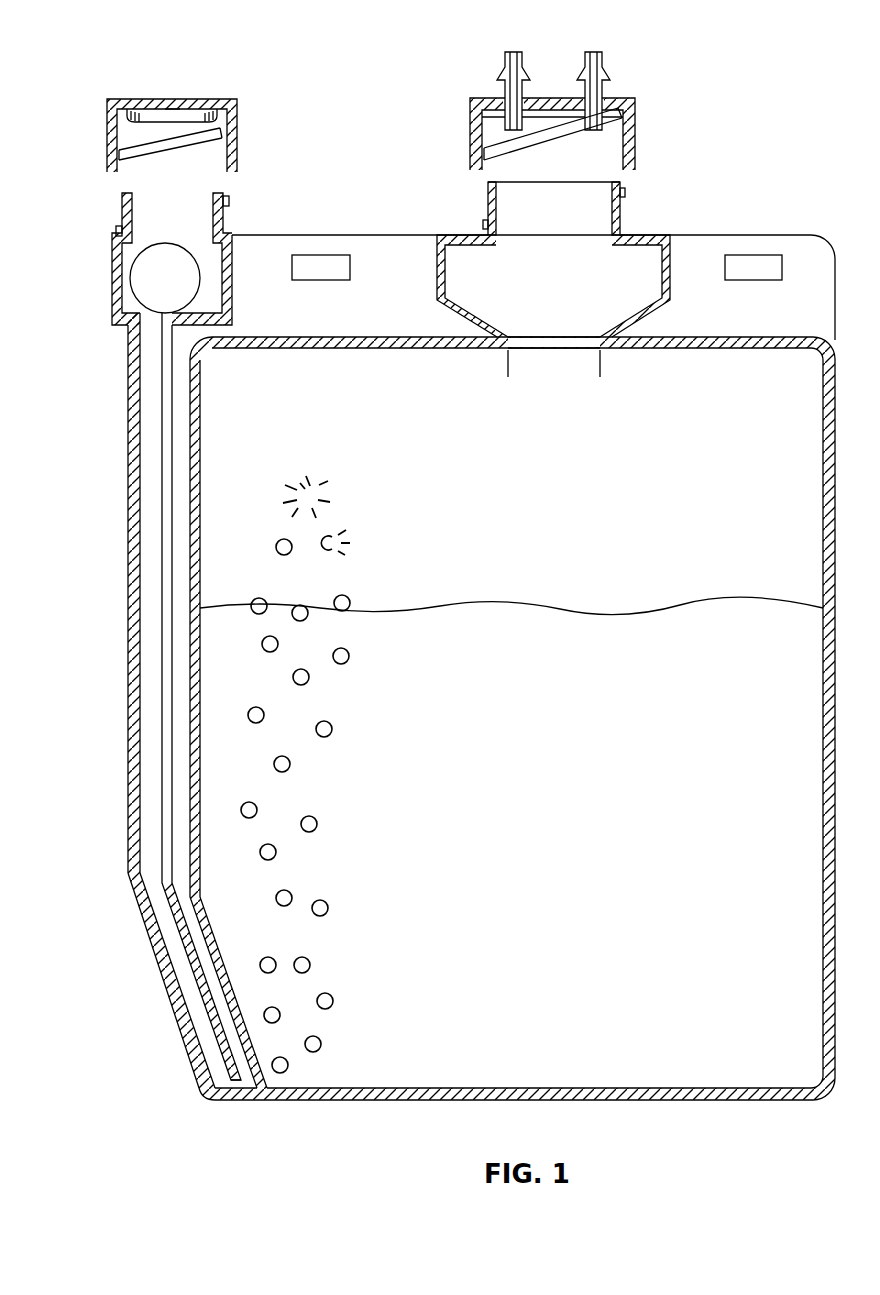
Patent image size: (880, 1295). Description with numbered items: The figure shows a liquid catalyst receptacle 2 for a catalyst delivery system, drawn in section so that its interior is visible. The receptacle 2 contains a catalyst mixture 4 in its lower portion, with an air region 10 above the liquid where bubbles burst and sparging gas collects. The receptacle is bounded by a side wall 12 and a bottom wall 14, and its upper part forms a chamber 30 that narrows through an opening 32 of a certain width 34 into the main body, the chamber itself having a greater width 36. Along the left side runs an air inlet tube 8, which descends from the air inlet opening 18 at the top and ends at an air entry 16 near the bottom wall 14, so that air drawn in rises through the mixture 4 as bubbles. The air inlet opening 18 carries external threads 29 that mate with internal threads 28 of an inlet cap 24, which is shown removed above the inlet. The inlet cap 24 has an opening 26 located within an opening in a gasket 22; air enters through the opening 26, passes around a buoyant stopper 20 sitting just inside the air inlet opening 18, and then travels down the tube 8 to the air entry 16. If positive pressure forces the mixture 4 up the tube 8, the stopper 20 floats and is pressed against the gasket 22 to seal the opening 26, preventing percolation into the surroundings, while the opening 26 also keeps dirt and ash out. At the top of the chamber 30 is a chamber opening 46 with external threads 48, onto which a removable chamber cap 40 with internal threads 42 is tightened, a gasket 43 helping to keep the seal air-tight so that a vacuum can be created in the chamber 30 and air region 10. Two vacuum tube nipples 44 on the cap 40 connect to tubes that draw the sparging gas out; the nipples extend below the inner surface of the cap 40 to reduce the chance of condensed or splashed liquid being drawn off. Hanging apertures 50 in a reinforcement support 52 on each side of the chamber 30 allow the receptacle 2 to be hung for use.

The liquid catalyst receptacle 2 is at (433, 577).
The catalyst mixture 4 is at (646, 787).
The air inlet tube 8 is at (130, 678).
The air region 10 is at (550, 479).
The container side wall 12 is at (200, 415).
The container bottom wall 14 is at (600, 1088).
The air entry 16 is at (270, 1087).
The air inlet opening 18 is at (150, 192).
The buoyant stopper 20 is at (150, 297).
The gasket 22 is at (132, 108).
The inlet cap 24 is at (168, 110).
The opening 26 is at (176, 100).
The internal threads 28 is at (130, 143).
The external threads 29 is at (116, 231).
The chamber 30 is at (542, 305).
The shoulder opening 32 is at (573, 346).
The opening width 34 is at (508, 363).
The shoulder width 36 is at (445, 259).
The chamber cap 40 is at (549, 89).
The internal threads 42 is at (483, 151).
The gasket 43 is at (470, 112).
The vacuum tube nipples 44 is at (513, 53).
The chamber opening 46 is at (545, 220).
The external threads 48 is at (483, 225).
The hanging apertures 50 is at (325, 257).
The reinforcement support 52 is at (323, 330).